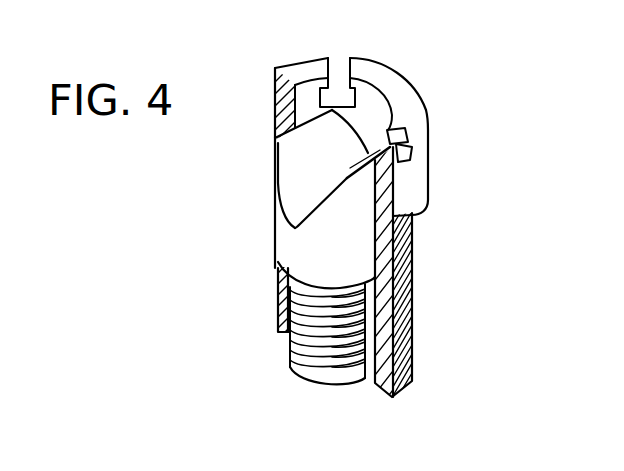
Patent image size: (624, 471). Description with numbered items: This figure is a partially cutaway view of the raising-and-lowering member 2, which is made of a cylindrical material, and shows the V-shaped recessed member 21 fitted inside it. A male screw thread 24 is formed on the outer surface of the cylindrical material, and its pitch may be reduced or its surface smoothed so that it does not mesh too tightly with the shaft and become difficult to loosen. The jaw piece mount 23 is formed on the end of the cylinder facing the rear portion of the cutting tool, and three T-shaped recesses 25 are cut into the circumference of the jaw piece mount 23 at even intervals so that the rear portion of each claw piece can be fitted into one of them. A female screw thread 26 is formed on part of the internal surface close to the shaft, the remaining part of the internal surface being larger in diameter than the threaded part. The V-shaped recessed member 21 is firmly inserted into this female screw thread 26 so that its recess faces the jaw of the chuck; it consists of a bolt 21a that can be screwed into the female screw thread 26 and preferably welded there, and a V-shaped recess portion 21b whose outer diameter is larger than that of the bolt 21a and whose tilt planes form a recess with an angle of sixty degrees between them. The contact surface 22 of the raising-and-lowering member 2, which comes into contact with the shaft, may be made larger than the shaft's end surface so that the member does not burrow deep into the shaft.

The raising-and-lowering member 2 is at (447, 138).
The V-shaped recessed member 21 is at (254, 258).
The bolt 21a is at (317, 346).
The V-shaped recess portion 21b is at (283, 224).
The contact surface 22 is at (416, 203).
The jaw piece mount 23 is at (408, 92).
The male screw thread 24 is at (412, 322).
The T-shaped recess 25 is at (333, 58).
The female screw thread 26 is at (348, 365).